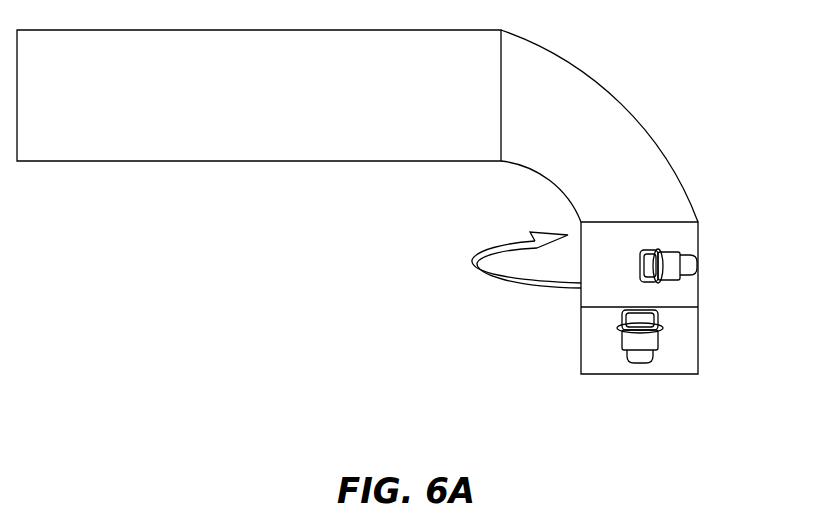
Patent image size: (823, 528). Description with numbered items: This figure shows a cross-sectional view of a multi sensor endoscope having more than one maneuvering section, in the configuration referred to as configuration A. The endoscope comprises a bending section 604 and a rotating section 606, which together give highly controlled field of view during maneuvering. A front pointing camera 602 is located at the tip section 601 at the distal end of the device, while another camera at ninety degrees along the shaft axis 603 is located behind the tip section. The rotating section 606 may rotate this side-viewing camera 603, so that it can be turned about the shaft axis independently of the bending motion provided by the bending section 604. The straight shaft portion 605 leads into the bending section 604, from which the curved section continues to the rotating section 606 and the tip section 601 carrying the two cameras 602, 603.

The tip section 601 is at (682, 375).
The front pointing camera 602 is at (629, 342).
The camera at 90 degrees along the shaft axis 603 is at (693, 261).
The bending section 604 is at (602, 150).
The arm section 605 is at (260, 108).
The rotating section 606 is at (530, 235).